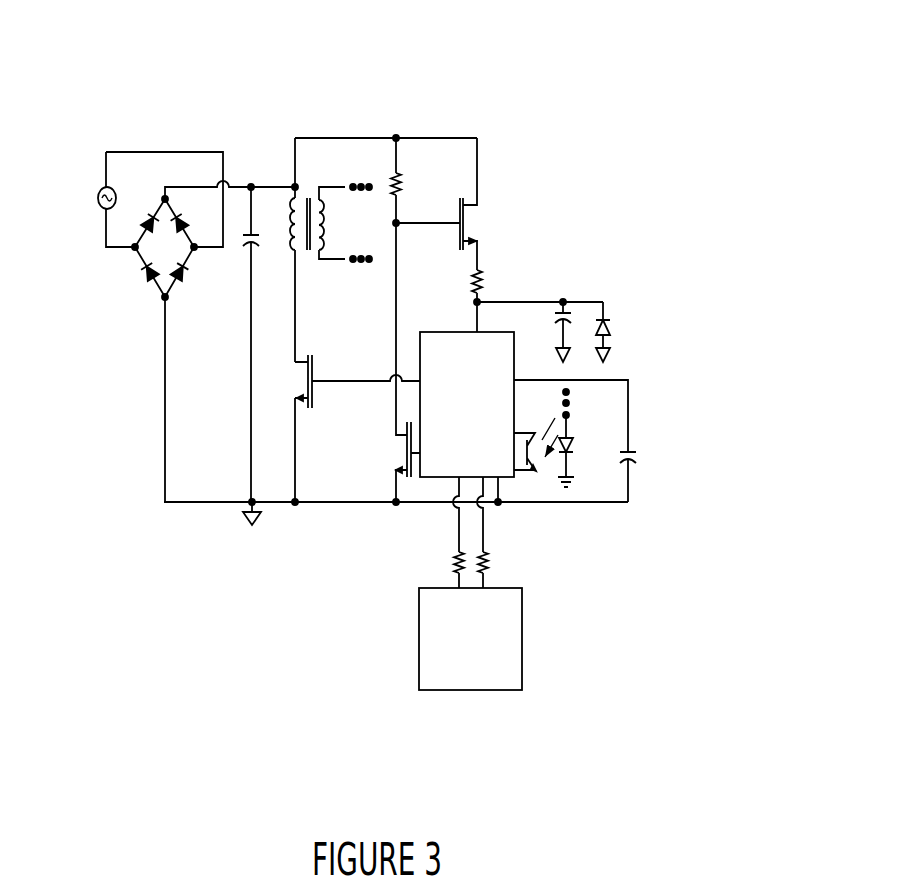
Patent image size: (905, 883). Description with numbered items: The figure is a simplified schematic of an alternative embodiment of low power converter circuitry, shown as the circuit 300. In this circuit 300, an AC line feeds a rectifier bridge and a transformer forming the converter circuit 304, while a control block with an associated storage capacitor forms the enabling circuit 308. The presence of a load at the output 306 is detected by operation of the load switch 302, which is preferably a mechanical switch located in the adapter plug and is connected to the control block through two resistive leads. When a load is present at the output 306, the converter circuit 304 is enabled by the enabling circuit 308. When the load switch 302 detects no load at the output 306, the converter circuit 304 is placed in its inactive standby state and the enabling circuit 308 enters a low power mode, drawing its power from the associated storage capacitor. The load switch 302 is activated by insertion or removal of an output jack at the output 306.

The circuit 300 is at (232, 635).
The load switch 302 is at (388, 680).
The converter circuit 304 is at (246, 98).
The output 306 is at (545, 562).
The enabling circuit 308 is at (518, 245).